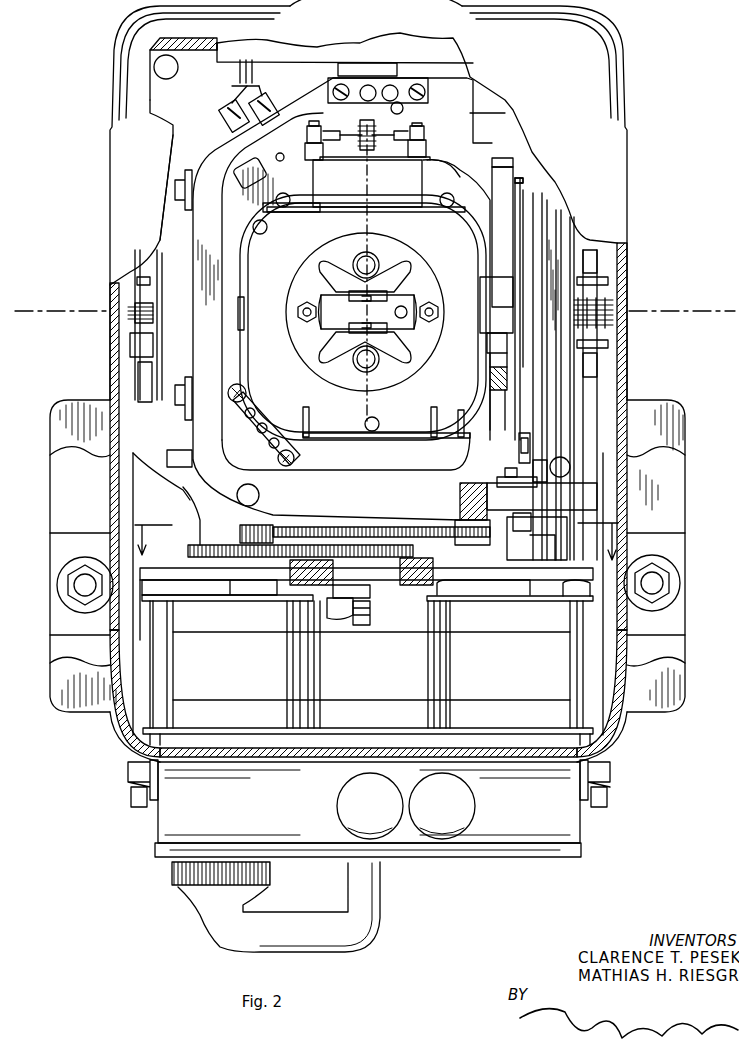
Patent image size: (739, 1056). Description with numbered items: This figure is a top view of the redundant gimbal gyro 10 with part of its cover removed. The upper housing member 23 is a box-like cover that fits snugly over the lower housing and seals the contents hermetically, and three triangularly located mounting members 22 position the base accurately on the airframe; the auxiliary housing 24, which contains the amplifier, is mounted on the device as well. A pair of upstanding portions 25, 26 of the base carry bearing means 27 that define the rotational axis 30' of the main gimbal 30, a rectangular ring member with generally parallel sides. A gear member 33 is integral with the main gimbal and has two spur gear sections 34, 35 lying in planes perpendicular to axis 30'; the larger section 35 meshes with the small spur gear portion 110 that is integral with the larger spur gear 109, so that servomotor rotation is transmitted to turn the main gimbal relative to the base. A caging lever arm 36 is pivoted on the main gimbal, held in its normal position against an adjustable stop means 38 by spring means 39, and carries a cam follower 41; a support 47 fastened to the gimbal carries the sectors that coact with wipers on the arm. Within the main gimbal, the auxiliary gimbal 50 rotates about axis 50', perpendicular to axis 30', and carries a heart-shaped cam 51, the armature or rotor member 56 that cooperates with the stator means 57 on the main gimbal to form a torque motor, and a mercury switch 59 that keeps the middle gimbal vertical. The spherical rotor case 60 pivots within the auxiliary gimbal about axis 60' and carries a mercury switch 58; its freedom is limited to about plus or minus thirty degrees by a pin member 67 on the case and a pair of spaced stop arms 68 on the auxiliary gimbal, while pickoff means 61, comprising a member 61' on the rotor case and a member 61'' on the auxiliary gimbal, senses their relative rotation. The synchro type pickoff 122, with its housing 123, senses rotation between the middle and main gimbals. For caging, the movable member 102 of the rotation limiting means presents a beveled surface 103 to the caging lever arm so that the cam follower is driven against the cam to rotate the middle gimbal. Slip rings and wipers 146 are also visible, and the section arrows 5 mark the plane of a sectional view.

The redundant gimbal gyro 10 is at (35, 8).
The mounting members 22 is at (80, 603).
The upper housing member 23 is at (568, 61).
The auxiliary housing 24 is at (506, 801).
The upstanding portion 25 is at (177, 502).
The upstanding portion 26 is at (236, 72).
The bearing means 27 is at (355, 578).
The main gimbal 30 is at (382, 299).
The main gimbal axis 30' is at (368, 673).
The gear member 33 is at (486, 542).
The spur gear section 34 is at (362, 563).
The spur gear portion 35 is at (381, 540).
The caging lever arm 36 is at (514, 476).
The adjustable stop means 38 is at (512, 520).
The spring means 39 is at (541, 483).
The cam follower 41 is at (524, 433).
The support 47 is at (548, 430).
The auxiliary gimbal 50 is at (353, 274).
The auxiliary gimbal axis 50' is at (375, 325).
The cam 51 is at (525, 309).
The armature or rotor member 56 is at (503, 173).
The stator means 57 is at (507, 134).
The mercury switch 58 is at (392, 305).
The mercury switch 59 is at (488, 337).
The rotor case 60 is at (365, 322).
The rotor case axis 60' is at (383, 275).
The pickoff means 61 is at (358, 166).
The pickoff member 61' is at (366, 219).
The pickoff member 61'' is at (453, 161).
The pin member 67 is at (377, 420).
The stop arms 68 is at (304, 418).
The rotatable member 102 is at (530, 560).
The beveled surface 103 is at (528, 520).
The spur gear 109 is at (215, 548).
The spur gear portion 110 is at (242, 535).
The synchro type pickoff 122 is at (160, 273).
The housing 123 is at (170, 244).
The slip rings and wipers 146 is at (641, 299).
The section marker 5 is at (377, 550).